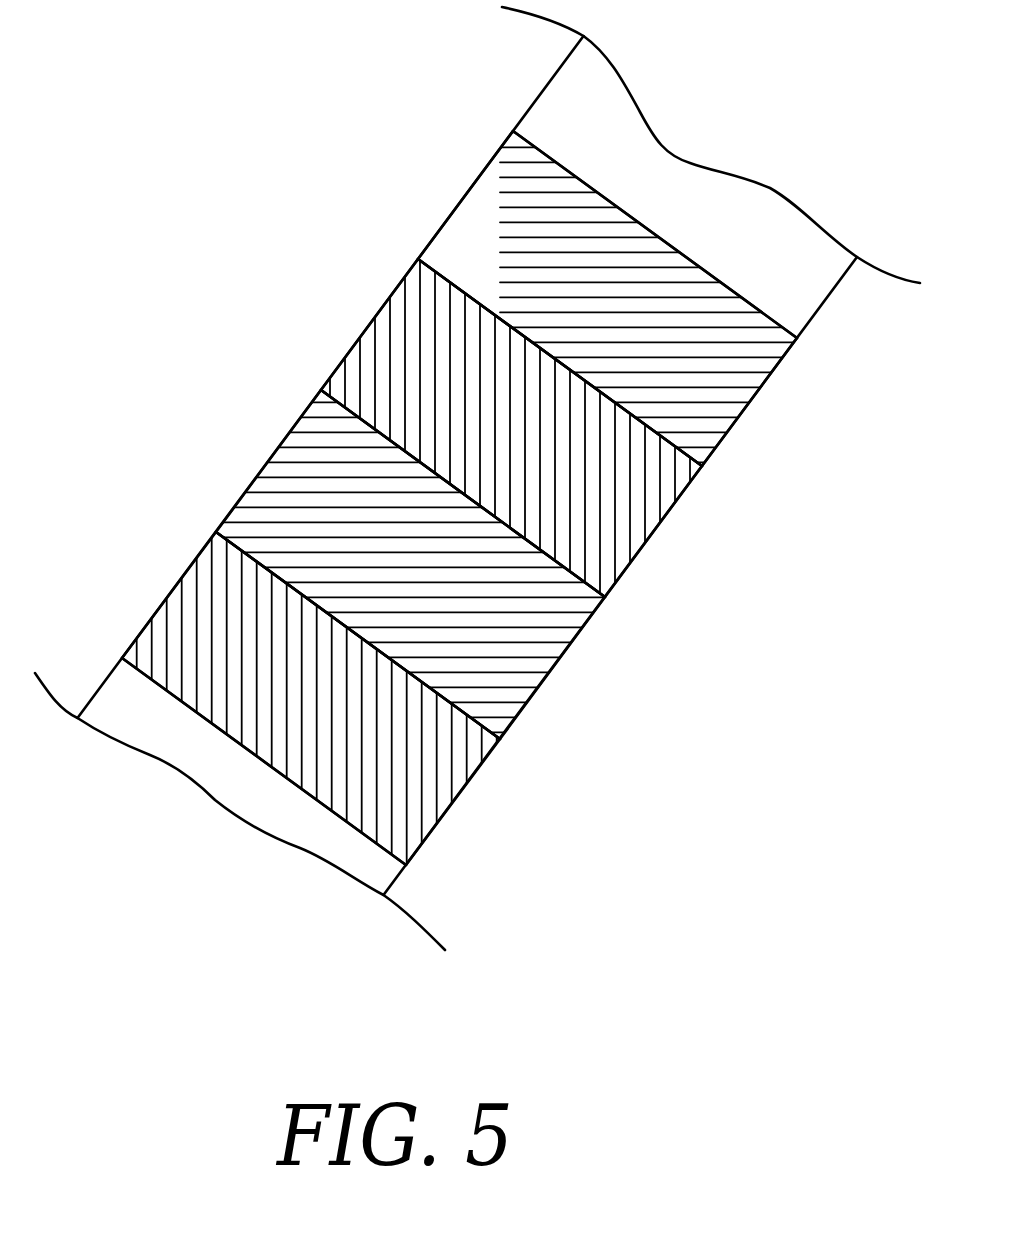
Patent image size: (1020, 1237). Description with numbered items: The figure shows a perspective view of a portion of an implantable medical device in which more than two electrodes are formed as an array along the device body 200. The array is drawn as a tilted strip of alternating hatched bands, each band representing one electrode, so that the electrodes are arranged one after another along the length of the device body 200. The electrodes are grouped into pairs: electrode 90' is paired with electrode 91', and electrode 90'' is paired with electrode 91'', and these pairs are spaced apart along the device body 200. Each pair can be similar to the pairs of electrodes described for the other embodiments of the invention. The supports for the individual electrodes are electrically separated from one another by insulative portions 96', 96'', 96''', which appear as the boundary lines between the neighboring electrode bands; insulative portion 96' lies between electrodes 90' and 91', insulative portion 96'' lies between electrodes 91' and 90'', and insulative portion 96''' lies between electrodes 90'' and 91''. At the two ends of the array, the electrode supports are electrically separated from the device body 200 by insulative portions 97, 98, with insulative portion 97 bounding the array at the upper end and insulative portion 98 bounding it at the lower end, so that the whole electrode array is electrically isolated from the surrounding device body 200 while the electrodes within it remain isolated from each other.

The device body 200 is at (730, 188).
The electrode 91'' is at (595, 298).
The electrode 90'' is at (490, 430).
The electrode 91' is at (401, 564).
The electrode 90' is at (288, 700).
The insulative portion 97 is at (797, 338).
The insulative portion 96''' is at (621, 391).
The insulative portion 96'' is at (509, 521).
The insulative portion 96' is at (403, 661).
The insulative portion 98 is at (406, 866).